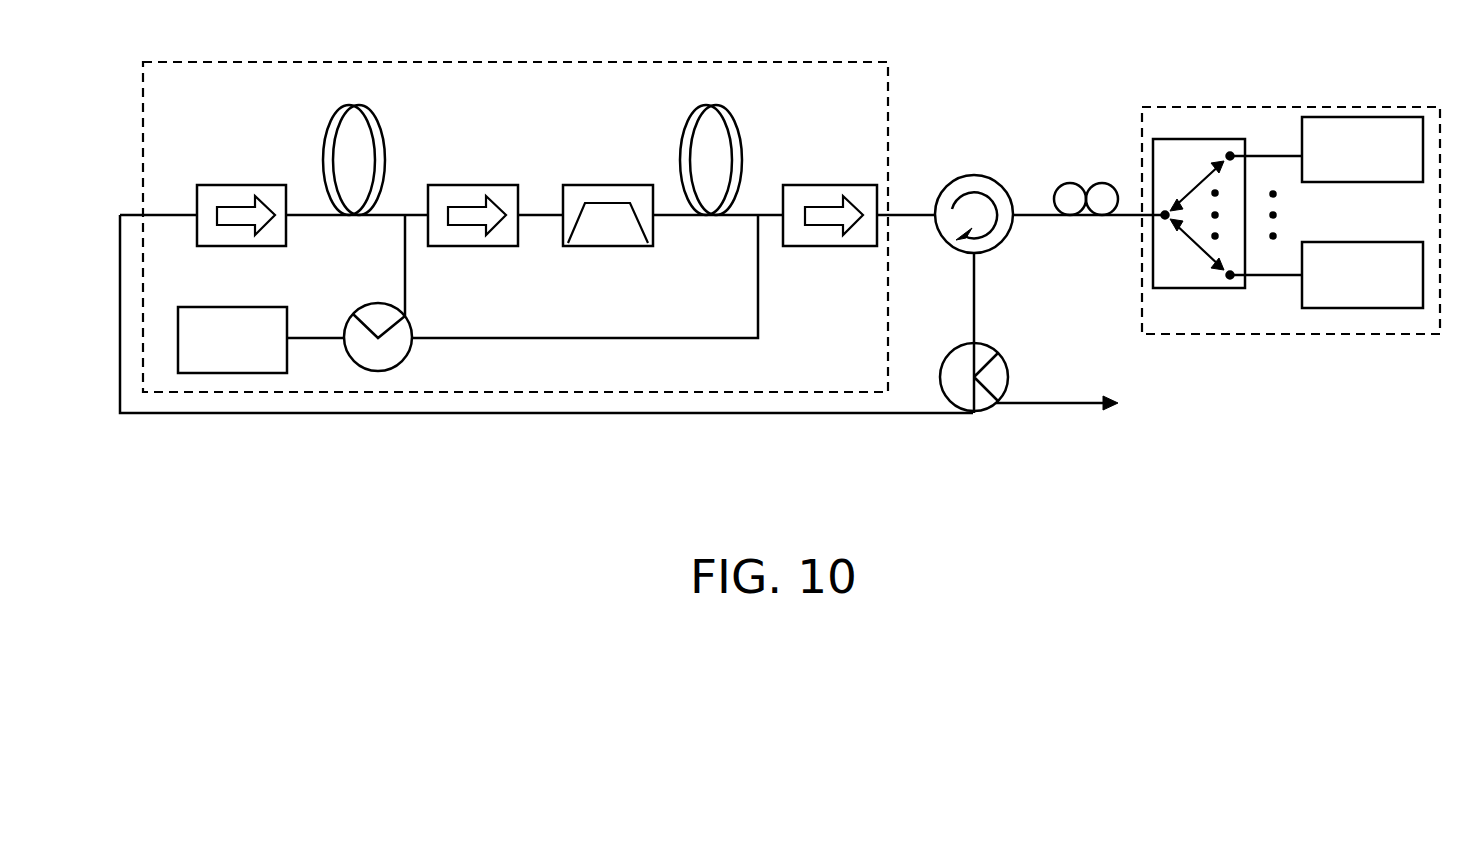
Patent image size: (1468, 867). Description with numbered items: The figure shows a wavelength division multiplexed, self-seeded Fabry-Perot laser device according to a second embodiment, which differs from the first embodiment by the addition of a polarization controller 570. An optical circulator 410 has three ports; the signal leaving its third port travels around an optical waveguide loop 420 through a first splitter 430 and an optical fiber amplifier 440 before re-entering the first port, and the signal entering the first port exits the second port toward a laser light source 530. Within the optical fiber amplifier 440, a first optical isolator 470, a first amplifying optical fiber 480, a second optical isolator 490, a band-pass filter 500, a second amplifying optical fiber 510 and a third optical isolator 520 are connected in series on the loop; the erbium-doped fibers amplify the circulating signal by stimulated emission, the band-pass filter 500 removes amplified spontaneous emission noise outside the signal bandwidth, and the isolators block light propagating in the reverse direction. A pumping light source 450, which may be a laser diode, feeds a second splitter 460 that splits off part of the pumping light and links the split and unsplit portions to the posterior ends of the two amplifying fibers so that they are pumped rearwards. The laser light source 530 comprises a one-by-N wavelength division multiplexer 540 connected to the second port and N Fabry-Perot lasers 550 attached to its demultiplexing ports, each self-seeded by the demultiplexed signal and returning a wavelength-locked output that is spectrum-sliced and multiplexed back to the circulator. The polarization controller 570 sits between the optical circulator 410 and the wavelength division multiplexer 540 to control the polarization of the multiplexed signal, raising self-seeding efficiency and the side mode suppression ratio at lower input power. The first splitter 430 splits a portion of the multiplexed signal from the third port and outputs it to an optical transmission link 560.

The optical circulator 410 is at (982, 176).
The optical waveguide loop 420 is at (757, 415).
The first splitter 430 is at (955, 358).
The optical fiber amplifier 440 is at (890, 128).
The pumping light source 450 is at (275, 307).
The second splitter 460 is at (410, 330).
The first optical isolator 470 is at (210, 185).
The first amplifying optical fiber 480 is at (387, 150).
The second optical isolator 490 is at (507, 185).
The band-pass filter 500 is at (598, 185).
The second amplifying optical fiber 510 is at (745, 145).
The third optical isolator 520 is at (845, 247).
The laser light source 530 is at (1157, 107).
The wavelength division multiplexer 540 is at (1215, 139).
The Fabry-Perot lasers 550 is at (1343, 117).
The optical transmission link 560 is at (1083, 408).
The polarization controller 570 is at (1075, 183).